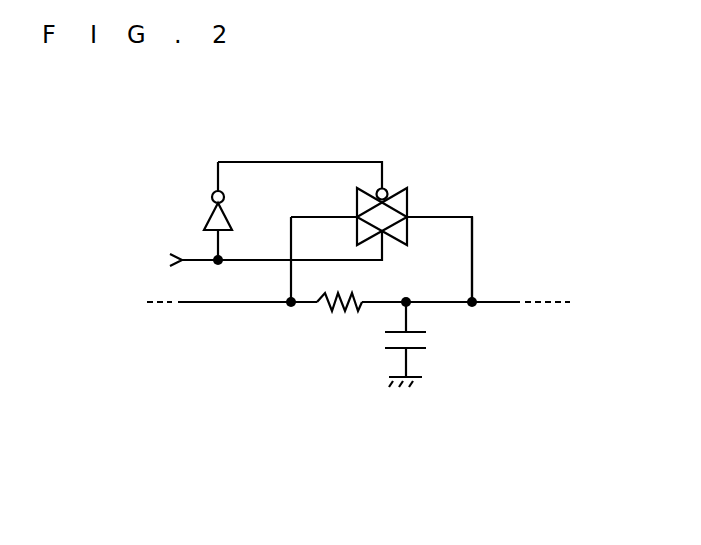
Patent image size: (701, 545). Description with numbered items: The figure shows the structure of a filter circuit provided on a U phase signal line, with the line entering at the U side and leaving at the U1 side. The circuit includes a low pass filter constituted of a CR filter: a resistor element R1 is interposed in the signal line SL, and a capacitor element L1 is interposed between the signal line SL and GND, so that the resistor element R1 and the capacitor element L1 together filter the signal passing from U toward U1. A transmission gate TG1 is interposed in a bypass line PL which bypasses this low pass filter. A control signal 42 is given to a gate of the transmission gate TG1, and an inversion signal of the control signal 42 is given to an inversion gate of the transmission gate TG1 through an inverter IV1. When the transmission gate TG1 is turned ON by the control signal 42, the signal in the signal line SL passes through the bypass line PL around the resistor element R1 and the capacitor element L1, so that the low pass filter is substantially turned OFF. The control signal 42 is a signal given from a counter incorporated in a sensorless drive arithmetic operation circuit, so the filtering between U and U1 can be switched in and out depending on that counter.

The inverter IV1 is at (208, 213).
The transmission gate TG1 is at (408, 202).
The control signal 42 is at (176, 262).
The bypass line PL is at (473, 247).
The signal line SL is at (508, 302).
The resistor element R1 is at (338, 312).
The capacitor element L1 is at (423, 340).
The U phase signal line input U is at (150, 302).
The U phase signal line output U1 is at (561, 302).
The element GND is at (406, 395).